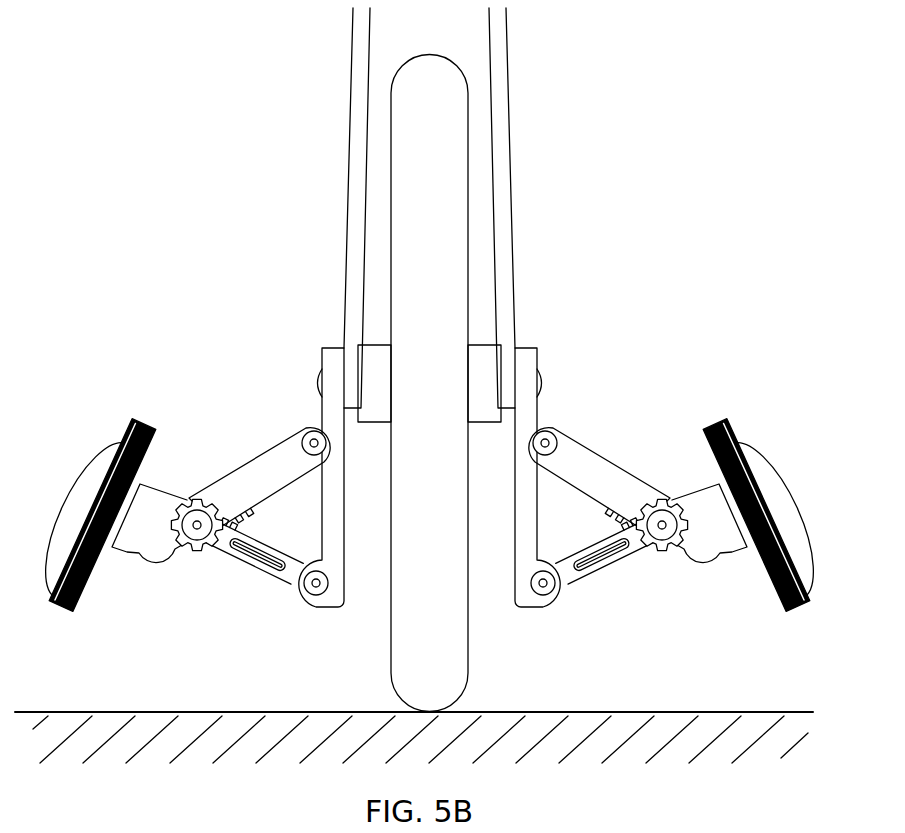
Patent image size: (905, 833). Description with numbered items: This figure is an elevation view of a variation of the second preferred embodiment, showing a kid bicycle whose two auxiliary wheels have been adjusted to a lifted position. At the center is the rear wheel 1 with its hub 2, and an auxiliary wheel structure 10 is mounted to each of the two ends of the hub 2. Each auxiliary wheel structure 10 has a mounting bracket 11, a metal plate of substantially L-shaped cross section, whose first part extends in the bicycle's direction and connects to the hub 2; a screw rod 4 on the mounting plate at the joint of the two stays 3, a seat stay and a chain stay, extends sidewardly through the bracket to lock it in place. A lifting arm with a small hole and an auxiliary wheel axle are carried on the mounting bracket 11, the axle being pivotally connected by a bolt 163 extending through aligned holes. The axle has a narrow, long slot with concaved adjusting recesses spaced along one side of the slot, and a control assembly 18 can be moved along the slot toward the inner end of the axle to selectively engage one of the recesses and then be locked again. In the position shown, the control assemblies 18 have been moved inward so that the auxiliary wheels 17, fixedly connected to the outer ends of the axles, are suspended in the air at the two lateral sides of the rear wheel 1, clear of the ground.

The rear wheel 1 is at (440, 88).
The hub 2 is at (368, 372).
The stays 3 is at (515, 258).
The screw rod 4 is at (541, 370).
The auxiliary wheel structure 10 is at (712, 317).
The mounting bracket 11 is at (533, 513).
The auxiliary wheel 17 is at (727, 422).
The control assembly 18 is at (665, 497).
The bolt 163 is at (546, 592).